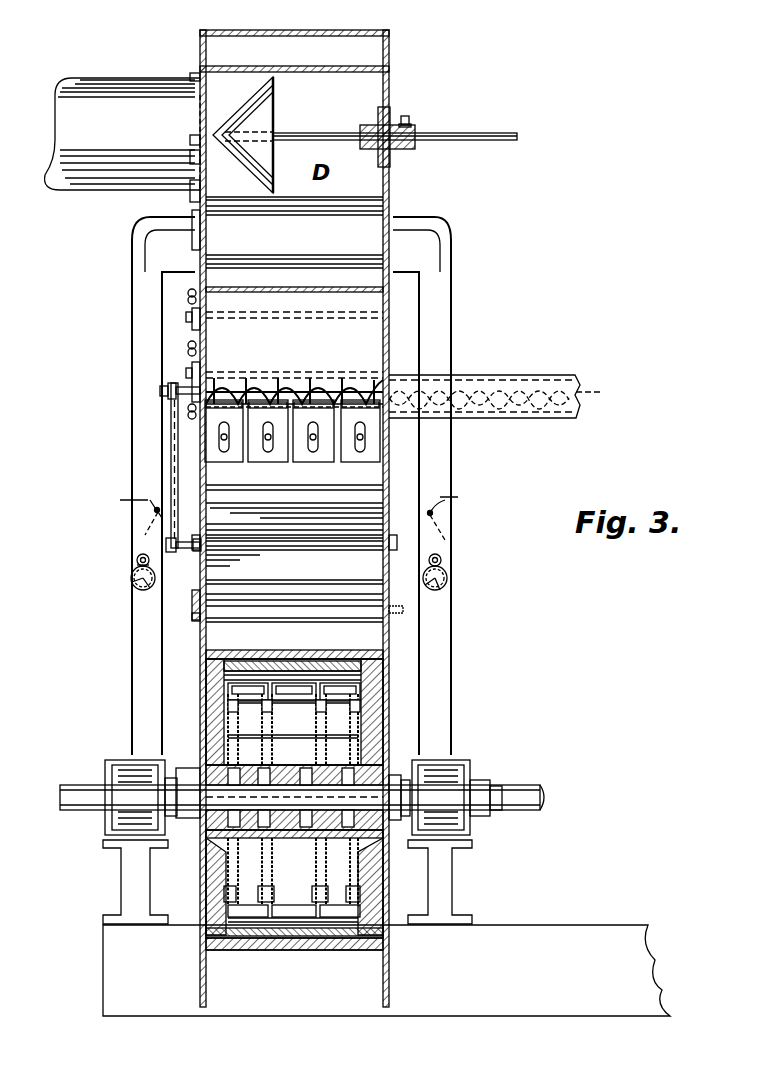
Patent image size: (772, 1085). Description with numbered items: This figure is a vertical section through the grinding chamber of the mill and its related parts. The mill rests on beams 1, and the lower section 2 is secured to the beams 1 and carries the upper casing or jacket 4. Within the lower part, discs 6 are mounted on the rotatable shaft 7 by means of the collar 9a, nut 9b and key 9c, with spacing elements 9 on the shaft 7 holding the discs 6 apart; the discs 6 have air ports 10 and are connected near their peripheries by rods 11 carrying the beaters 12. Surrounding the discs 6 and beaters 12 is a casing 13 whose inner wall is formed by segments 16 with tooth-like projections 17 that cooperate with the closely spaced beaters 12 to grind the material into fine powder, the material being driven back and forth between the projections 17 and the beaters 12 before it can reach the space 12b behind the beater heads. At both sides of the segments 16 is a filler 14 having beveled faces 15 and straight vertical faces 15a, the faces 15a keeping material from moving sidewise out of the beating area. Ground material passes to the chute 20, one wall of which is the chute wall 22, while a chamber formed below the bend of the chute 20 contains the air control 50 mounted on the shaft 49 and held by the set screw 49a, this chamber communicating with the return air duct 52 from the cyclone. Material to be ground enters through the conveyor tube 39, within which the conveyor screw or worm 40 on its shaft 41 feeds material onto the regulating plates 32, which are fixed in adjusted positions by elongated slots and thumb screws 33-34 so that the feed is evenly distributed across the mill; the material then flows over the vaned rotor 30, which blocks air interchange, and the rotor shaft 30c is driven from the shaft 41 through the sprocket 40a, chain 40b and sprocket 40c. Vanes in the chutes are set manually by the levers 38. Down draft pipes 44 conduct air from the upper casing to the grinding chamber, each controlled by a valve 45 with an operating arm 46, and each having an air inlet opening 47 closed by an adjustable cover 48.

The beams 1 is at (120, 965).
The lower section 2 is at (389, 942).
The casing or jacket 4 is at (272, 18).
The discs 6 is at (215, 712).
The rotatable shaft 7 is at (507, 790).
The spacing elements 9 is at (294, 723).
The collar 9a is at (215, 770).
The nut 9b is at (385, 752).
The key 9c is at (383, 860).
The air ports 10 is at (293, 729).
The rods 11 is at (294, 716).
The beaters 12 is at (335, 657).
The space behind beater head 12b is at (383, 900).
The casing 13 is at (225, 655).
The filler 14 is at (212, 700).
The beveled inner peripheral faces 15 is at (376, 742).
The straight vertical faces 15a is at (383, 950).
The segments 16 is at (266, 656).
The tooth-like projections 17 is at (310, 657).
The chute 20 is at (294, 51).
The chute wall 22 is at (350, 100).
The rotor 30 is at (297, 553).
The rotor shaft 30c is at (192, 590).
The regulating plates 32 is at (322, 478).
The elongated slots and thumb screws 33-34 is at (222, 437).
The levers 38 is at (185, 155).
The conveyor tube 39 is at (508, 358).
The conveyor screw or worm 40 is at (300, 385).
The sprocket 40a is at (166, 388).
The chain 40b is at (170, 432).
The sprocket 40c is at (165, 546).
The worm shaft 41 is at (599, 390).
The down draft pipes 44 is at (130, 640).
The valves 45 is at (148, 530).
The operating arm 46 is at (282, 502).
The air inlet openings 47 is at (128, 575).
The covers 48 is at (138, 585).
The shaft 49 is at (462, 132).
The set screw 49a is at (412, 118).
The air control 50 is at (262, 113).
The return air duct 52 is at (107, 95).